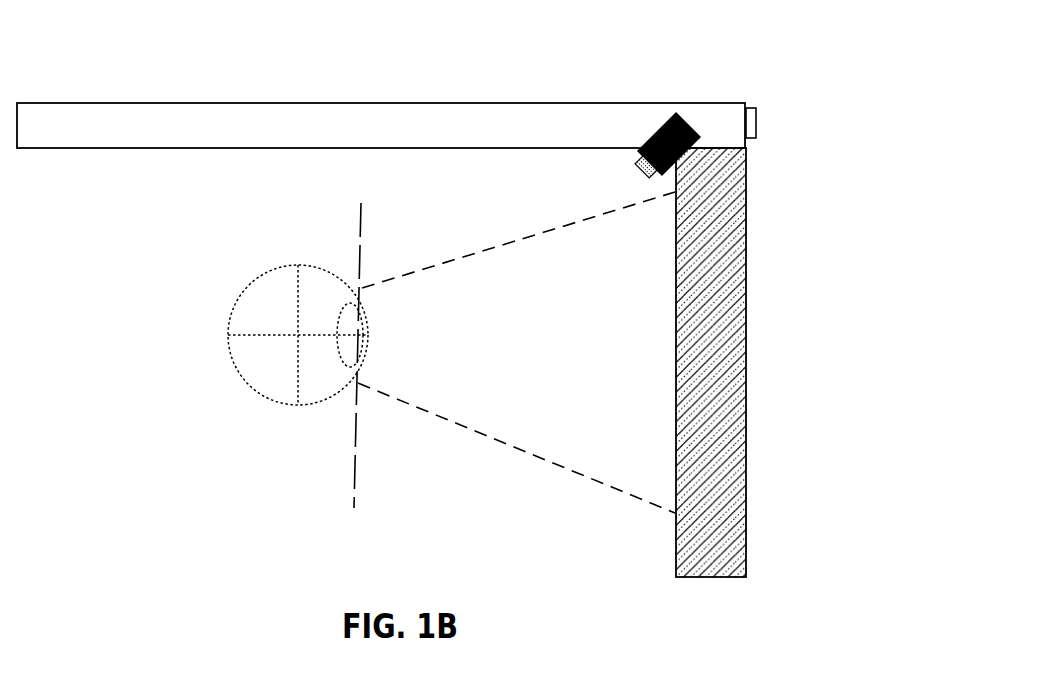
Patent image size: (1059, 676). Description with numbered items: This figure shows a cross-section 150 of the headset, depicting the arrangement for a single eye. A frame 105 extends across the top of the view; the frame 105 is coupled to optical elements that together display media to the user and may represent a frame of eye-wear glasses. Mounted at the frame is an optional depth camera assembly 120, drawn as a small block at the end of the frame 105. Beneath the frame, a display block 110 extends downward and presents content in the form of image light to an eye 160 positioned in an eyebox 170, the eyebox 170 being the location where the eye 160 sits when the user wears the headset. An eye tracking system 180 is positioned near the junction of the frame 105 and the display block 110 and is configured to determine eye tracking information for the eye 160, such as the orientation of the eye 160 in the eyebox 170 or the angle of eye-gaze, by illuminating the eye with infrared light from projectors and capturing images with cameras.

The cross-section 150 is at (88, 60).
The frame 105 is at (592, 103).
The eye tracking system 180 is at (682, 118).
The depth camera assembly 120 is at (757, 118).
The display block 110 is at (698, 237).
The eye 160 is at (265, 275).
The eyebox 170 is at (357, 383).